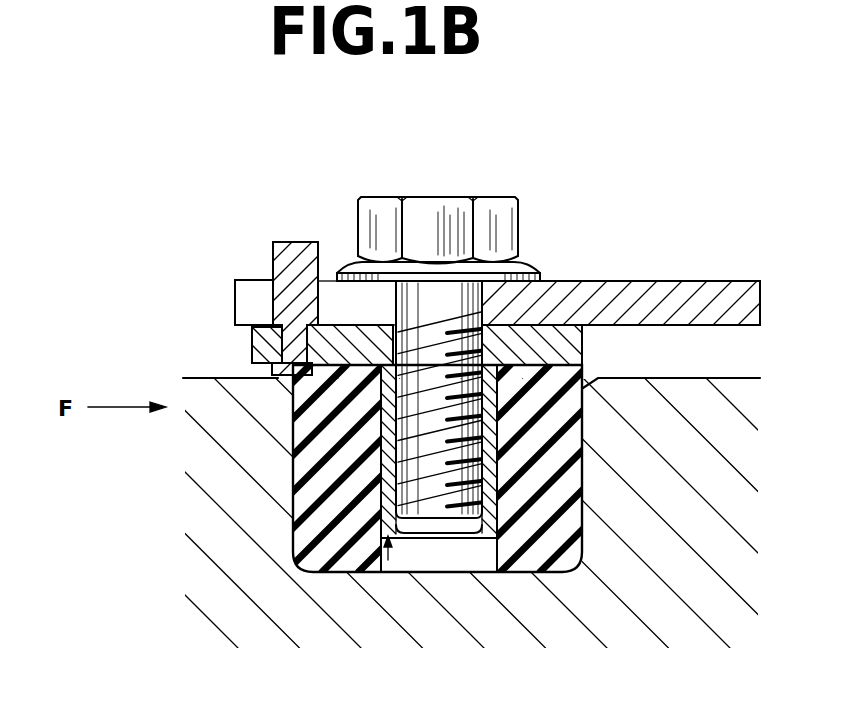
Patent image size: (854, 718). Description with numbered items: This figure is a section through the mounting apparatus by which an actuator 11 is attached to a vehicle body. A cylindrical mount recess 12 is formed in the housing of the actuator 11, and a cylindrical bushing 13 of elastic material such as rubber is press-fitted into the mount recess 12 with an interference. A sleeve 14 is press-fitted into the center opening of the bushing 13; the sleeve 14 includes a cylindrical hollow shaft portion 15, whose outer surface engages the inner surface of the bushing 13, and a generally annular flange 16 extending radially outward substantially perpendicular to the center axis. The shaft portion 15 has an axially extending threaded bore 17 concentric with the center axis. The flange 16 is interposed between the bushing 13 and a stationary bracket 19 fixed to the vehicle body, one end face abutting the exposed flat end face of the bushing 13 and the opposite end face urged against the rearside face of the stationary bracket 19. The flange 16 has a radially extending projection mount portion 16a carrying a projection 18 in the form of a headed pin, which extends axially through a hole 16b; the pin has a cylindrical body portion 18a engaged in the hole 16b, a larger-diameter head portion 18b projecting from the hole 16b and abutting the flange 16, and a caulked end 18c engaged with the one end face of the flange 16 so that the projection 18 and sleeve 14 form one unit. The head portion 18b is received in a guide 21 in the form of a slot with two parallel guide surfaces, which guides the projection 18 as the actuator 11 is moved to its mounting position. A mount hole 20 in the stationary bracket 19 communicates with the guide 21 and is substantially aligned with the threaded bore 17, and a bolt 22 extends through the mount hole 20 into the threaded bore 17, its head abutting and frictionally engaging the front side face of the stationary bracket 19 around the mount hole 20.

The actuator 11 is at (212, 473).
The mount recess 12 is at (300, 520).
The bushing 13 is at (547, 560).
The sleeve 14 is at (388, 572).
The shaft portion 15 is at (495, 485).
The flange 16 is at (573, 325).
The projection mount portion 16a is at (252, 340).
The hole 16b is at (300, 338).
The threaded bore 17 is at (470, 435).
The projection 18 is at (268, 252).
The body portion 18a is at (325, 327).
The head portion 18b is at (290, 247).
The caulked end 18c is at (283, 380).
The stationary bracket 19 is at (667, 280).
The mount hole 20 is at (524, 273).
The guide 21 is at (242, 298).
The bolt 22 is at (499, 198).